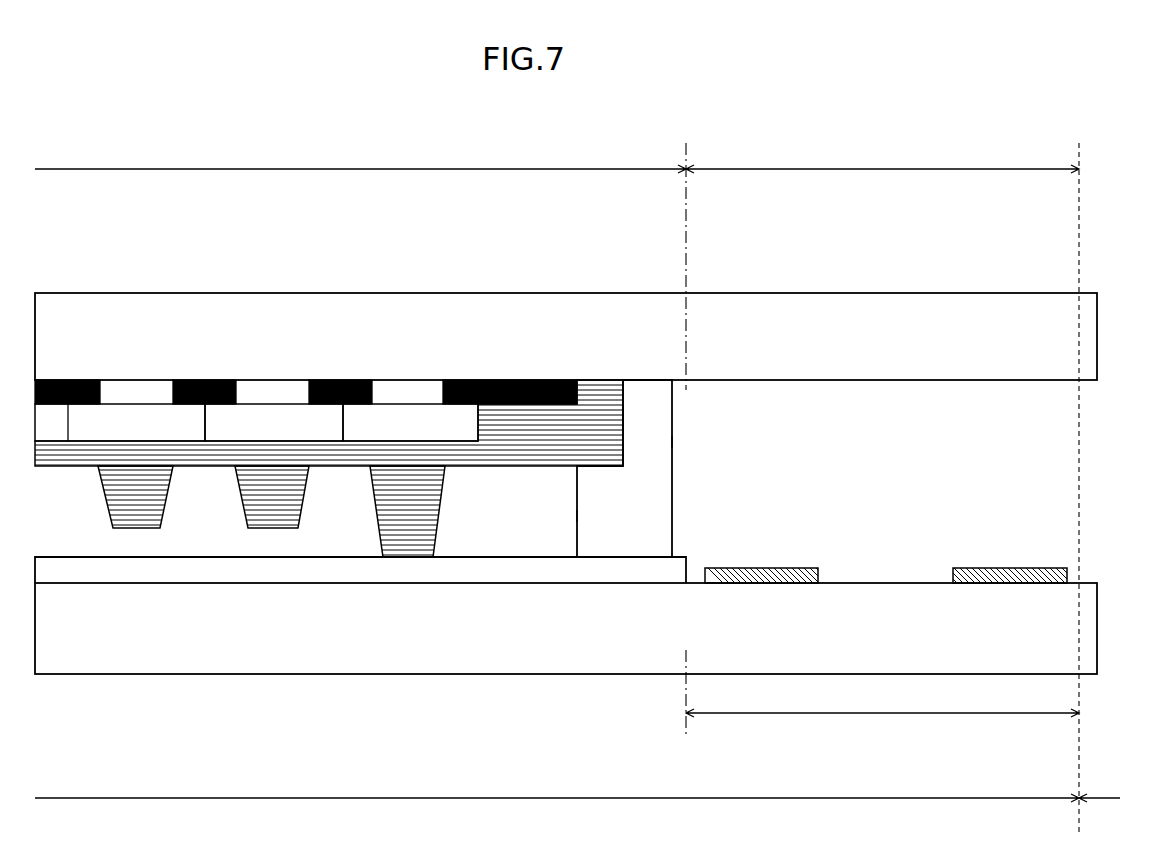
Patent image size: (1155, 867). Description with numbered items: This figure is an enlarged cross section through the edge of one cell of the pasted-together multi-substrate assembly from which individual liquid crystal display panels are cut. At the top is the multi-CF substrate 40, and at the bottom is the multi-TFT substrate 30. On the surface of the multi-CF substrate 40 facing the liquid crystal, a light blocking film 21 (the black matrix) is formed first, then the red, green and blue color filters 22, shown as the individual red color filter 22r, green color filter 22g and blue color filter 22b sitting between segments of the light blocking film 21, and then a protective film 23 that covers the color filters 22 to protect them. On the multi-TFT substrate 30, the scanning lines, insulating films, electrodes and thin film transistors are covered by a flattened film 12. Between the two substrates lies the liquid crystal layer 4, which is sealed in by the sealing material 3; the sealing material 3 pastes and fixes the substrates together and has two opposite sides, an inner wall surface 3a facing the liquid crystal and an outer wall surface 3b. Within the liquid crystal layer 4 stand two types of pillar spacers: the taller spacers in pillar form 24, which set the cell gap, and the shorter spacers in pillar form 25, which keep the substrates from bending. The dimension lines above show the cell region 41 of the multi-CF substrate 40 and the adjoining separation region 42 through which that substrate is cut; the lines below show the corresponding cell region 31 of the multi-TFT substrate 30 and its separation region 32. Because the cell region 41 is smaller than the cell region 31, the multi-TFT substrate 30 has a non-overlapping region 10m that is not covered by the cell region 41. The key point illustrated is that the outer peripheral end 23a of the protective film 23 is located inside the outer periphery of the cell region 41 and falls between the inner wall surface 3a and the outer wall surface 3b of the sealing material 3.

The multi-CF substrate 40 is at (93, 318).
The light blocking film 21 is at (512, 380).
The color filters 22 is at (256, 329).
The red color filter 22r is at (137, 390).
The green color filter 22g is at (272, 390).
The blue color filter 22b is at (408, 393).
The protective film 23 is at (593, 433).
The outer peripheral end of the protective film 23a is at (633, 419).
The spacers in pillar form 25 is at (270, 518).
The spacers in pillar form 24 is at (403, 528).
The liquid crystal layer 4 is at (203, 518).
The sealing material 3 is at (648, 508).
The inner wall surface 3a is at (569, 520).
The outer wall surface 3b is at (681, 446).
The flattened film 12 is at (178, 571).
The multi-TFT substrate 30 is at (94, 627).
The cell region 41 is at (360, 157).
The separation region 42 is at (882, 157).
The non-overlapping region 10m is at (882, 725).
The cell region 31 is at (557, 812).
The separation region 32 is at (1107, 809).